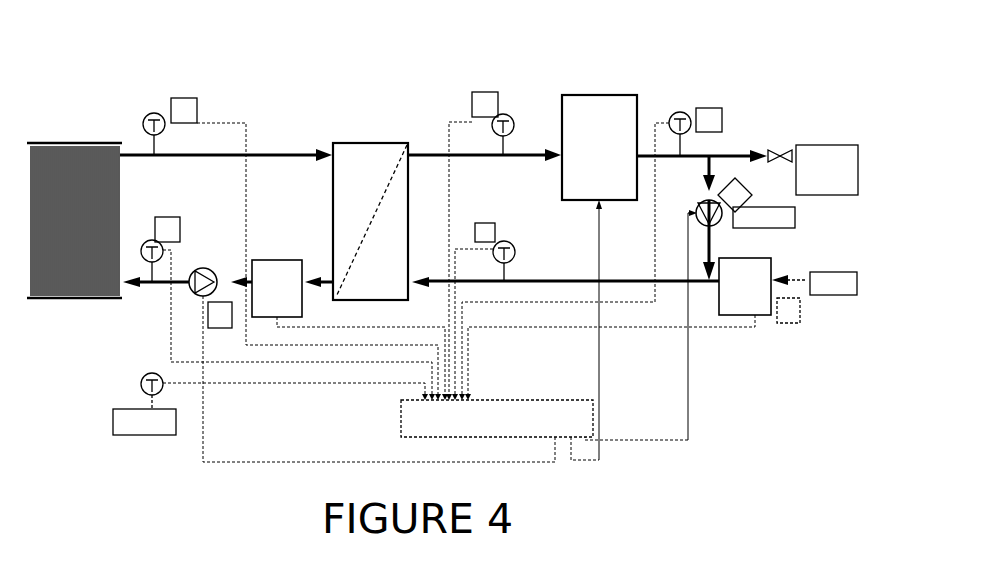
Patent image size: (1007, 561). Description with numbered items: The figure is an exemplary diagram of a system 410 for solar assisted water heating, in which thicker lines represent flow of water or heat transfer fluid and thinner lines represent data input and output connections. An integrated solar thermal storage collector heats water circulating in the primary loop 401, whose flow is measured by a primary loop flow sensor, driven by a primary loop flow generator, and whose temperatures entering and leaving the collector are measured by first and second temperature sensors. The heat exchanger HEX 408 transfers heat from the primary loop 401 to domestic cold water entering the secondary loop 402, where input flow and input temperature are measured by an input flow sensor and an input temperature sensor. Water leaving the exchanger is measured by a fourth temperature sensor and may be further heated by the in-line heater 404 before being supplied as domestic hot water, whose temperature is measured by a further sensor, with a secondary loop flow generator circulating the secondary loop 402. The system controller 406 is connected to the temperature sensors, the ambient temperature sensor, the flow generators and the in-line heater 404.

The solar water heating system 410 is at (122, 63).
The primary loop 401 is at (337, 280).
The secondary loop 402 is at (633, 266).
The in-line heater 404 is at (599, 277).
The system controller 406 is at (497, 415).
The heat exchanger HEX 408 is at (370, 221).